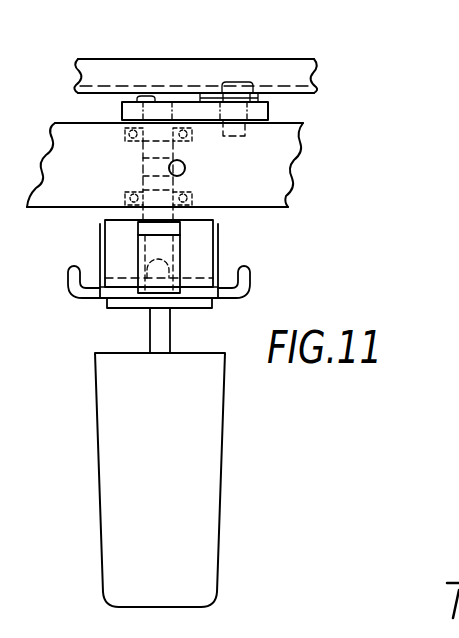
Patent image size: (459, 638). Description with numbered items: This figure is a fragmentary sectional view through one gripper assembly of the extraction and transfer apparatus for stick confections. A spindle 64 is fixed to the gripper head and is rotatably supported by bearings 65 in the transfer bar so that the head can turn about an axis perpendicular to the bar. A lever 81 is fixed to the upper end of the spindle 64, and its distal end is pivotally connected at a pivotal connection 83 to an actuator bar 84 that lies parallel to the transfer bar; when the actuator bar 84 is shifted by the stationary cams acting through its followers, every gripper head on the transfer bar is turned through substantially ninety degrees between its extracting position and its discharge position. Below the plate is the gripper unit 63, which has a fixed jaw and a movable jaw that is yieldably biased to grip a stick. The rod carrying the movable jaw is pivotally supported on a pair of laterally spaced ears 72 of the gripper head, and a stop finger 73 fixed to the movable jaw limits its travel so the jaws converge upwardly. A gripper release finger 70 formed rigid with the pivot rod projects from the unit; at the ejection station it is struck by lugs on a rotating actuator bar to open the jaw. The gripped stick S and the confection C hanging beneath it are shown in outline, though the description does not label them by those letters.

The gripper unit 63 is at (438, 0).
The spindle 64 is at (143, 157).
The bearings 65 is at (128, 139).
The gripper release finger 70 is at (250, 280).
The laterally spaced ears 72 is at (218, 253).
The stop finger 73 is at (183, 247).
The lever 81 is at (190, 109).
The pivotal connection 83 is at (238, 78).
The actuator bar 84 is at (198, 149).
The stem S is at (172, 326).
The container C is at (222, 487).